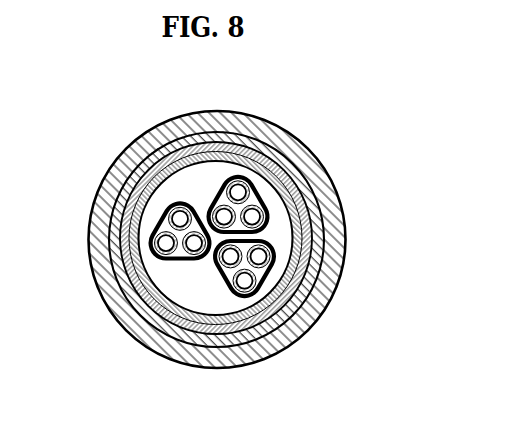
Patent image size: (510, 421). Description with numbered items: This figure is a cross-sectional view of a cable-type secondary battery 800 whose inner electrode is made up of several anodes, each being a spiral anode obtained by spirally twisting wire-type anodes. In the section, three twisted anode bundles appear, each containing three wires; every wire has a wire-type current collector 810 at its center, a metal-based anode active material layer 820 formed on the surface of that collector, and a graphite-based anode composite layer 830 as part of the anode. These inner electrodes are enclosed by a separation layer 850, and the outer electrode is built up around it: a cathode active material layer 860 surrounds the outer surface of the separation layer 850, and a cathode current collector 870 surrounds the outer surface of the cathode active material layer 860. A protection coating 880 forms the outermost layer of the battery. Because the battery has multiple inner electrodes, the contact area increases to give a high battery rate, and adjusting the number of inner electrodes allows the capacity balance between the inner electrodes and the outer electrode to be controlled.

The cable-type secondary battery 800 is at (156, 116).
The wire-type current collector 810 is at (168, 214).
The metal-based anode active material layer 820 is at (168, 209).
The graphite-based anode composite layer 830 is at (136, 173).
The separation layer 850 is at (223, 165).
The cathode active material layer 860 is at (246, 150).
The cathode current collector 870 is at (268, 142).
The protection coating 880 is at (293, 145).